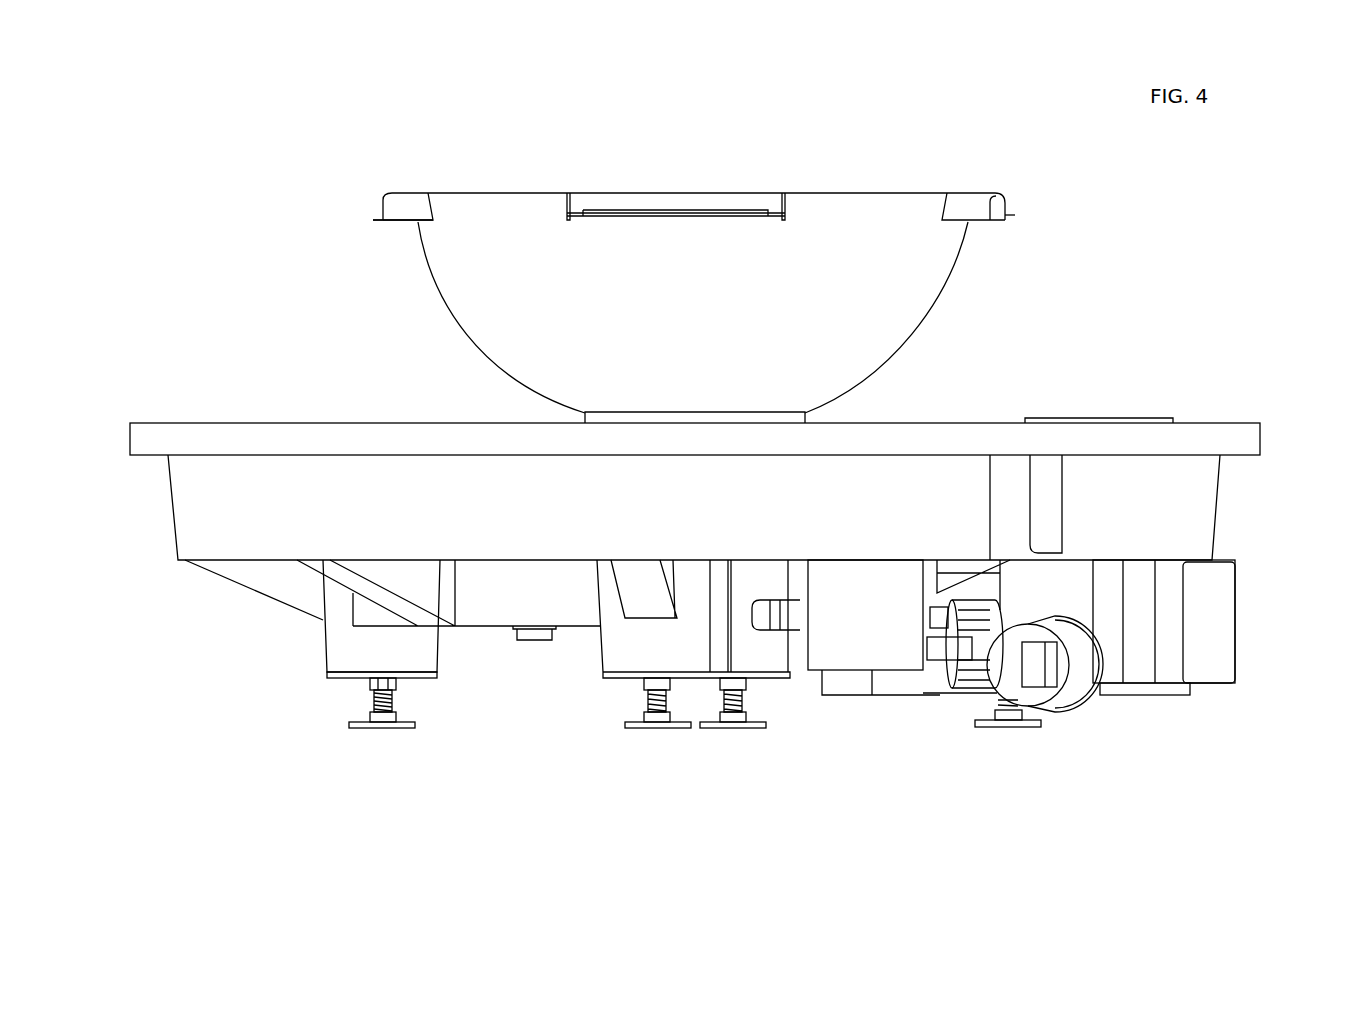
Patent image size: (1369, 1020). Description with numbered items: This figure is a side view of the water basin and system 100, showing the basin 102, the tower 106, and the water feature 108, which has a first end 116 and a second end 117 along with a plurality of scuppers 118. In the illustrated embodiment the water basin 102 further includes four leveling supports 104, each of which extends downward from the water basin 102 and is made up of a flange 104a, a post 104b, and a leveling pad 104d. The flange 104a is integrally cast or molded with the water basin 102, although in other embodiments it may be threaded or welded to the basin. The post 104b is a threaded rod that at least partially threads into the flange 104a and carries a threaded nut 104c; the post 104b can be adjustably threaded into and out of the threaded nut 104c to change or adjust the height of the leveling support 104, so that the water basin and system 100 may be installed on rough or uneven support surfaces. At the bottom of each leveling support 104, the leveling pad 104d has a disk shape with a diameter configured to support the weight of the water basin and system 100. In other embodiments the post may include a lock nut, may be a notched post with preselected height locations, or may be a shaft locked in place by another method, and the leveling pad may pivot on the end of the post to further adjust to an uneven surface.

The water basin and system 100 is at (242, 254).
The water basin 102 is at (1167, 480).
The leveling support 104 is at (623, 675).
The flange 104a is at (338, 652).
The post 104b is at (392, 700).
The threaded nut 104c is at (373, 685).
The leveling pad 104d is at (353, 724).
The tower 106 is at (800, 419).
The water feature 108 is at (925, 243).
The first end 116 is at (644, 410).
The second end 117 is at (888, 193).
The scupper 118 is at (383, 216).